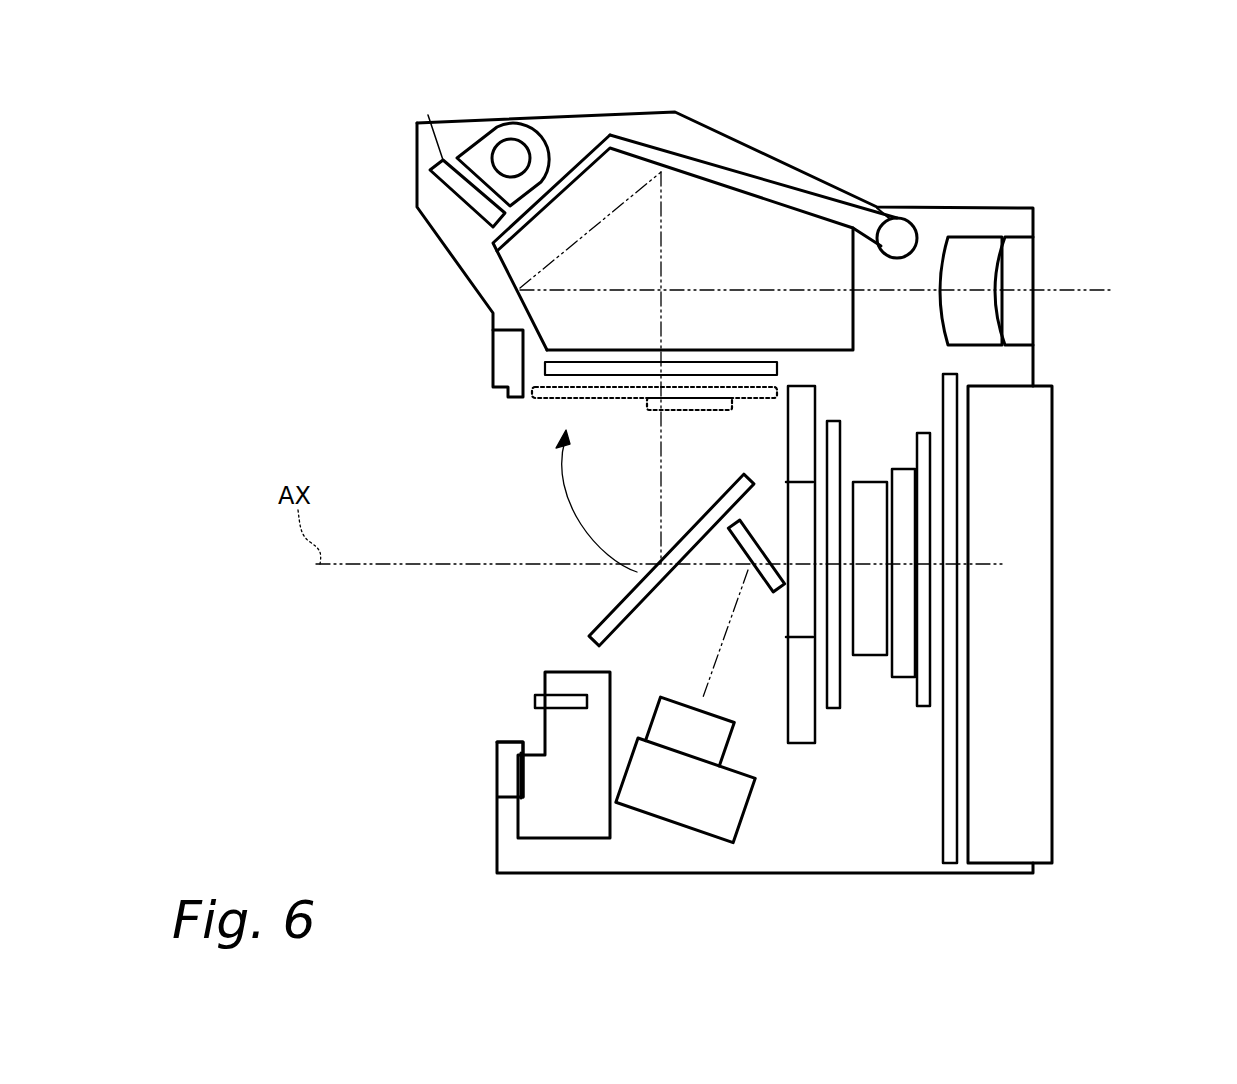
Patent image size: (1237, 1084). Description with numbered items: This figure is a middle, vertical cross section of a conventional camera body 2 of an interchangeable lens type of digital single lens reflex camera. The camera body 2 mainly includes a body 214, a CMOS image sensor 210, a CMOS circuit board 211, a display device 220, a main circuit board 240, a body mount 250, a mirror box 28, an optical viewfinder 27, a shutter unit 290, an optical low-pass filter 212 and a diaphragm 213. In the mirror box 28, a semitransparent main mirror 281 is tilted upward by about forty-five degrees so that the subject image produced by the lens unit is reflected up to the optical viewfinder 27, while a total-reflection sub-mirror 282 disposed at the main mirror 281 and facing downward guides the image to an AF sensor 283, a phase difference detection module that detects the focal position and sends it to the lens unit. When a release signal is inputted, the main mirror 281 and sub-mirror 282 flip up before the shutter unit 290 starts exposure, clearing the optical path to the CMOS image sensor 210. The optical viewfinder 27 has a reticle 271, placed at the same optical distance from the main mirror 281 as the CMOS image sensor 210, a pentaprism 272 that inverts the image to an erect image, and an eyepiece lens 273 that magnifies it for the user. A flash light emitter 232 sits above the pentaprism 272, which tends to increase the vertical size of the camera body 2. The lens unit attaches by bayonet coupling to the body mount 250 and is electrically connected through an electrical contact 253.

The camera body 2 is at (360, 227).
The optical viewfinder 27 is at (1003, 162).
The mirror box 28 is at (468, 716).
The CMOS image sensor 210 is at (905, 577).
The CMOS circuit board 211 is at (930, 517).
The optical low-pass filter 212 is at (727, 588).
The diaphragm 213 is at (840, 657).
The body 214 is at (598, 797).
The display device 220 is at (1018, 427).
The flash light emitter 232 is at (448, 133).
The main circuit board 240 is at (952, 460).
The body mount 250 is at (507, 357).
The electrical contact 253 is at (568, 702).
The reticle 271 is at (618, 375).
The pentaprism 272 is at (750, 220).
The eyepiece lens 273 is at (1020, 263).
The main mirror 281 is at (718, 513).
The sub-mirror 282 is at (737, 538).
The AF sensor 283 is at (722, 802).
The shutter unit 290 is at (803, 707).